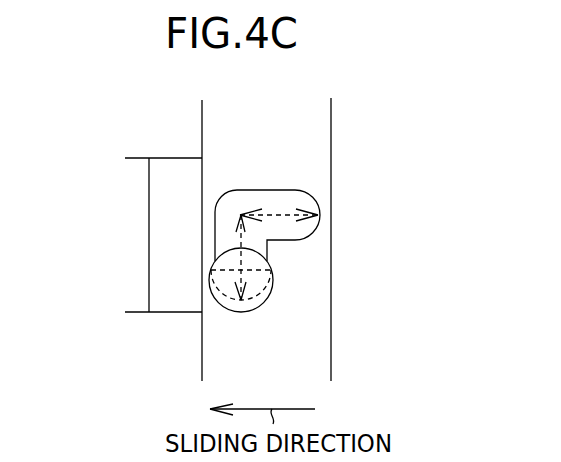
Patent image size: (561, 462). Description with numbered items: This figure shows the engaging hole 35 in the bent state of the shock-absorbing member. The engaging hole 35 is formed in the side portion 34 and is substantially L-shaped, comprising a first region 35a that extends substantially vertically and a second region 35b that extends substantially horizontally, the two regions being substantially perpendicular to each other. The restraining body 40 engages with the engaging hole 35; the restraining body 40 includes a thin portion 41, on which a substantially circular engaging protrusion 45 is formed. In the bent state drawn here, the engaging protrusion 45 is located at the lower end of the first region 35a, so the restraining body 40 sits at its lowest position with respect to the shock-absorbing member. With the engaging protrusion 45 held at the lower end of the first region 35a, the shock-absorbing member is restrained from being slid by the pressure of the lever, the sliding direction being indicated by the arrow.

The side portion 34 is at (317, 133).
The engaging hole 35 is at (287, 198).
The first region 35a is at (272, 273).
The second region 35b is at (283, 226).
The restraining body 40 is at (167, 312).
The thin portion 41 is at (175, 172).
The engaging protrusion 45 is at (264, 305).